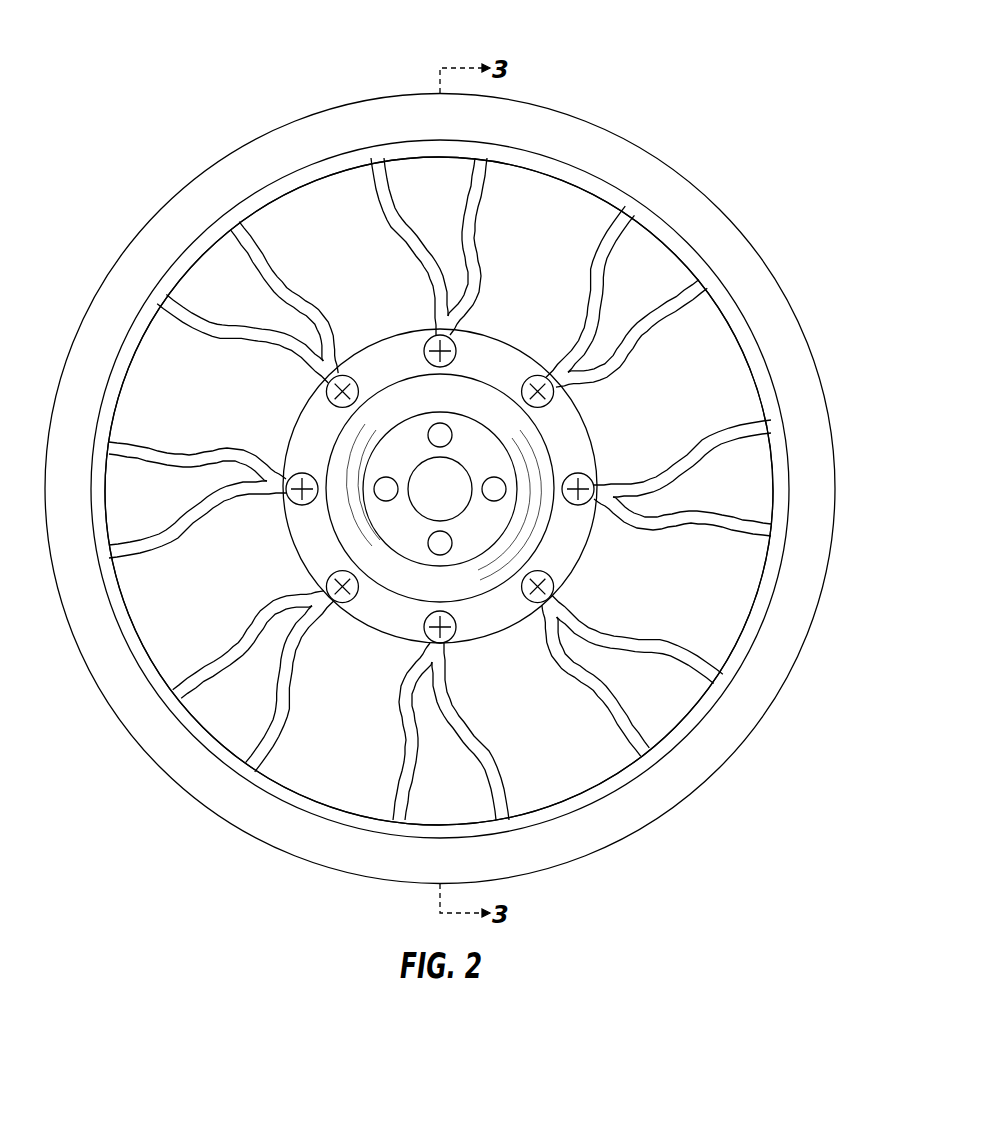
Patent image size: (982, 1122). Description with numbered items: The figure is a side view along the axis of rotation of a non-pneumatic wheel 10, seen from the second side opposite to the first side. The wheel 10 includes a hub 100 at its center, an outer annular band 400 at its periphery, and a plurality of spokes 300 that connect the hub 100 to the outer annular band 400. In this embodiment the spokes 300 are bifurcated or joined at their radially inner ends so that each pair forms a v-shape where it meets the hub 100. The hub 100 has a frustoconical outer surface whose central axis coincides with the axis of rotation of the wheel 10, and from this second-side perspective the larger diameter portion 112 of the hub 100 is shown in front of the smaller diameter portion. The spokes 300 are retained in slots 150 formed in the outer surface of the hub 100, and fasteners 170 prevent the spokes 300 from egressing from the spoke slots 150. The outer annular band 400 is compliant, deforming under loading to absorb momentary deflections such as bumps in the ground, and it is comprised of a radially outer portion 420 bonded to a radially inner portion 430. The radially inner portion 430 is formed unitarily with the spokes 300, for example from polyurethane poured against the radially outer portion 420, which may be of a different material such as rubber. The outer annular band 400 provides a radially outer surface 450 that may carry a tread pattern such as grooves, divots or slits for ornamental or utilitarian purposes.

The non-pneumatic wheel 10 is at (801, 69).
The hub 100 is at (495, 331).
The larger diameter portion 112 is at (505, 642).
The slots 150 is at (325, 385).
The fasteners 170 is at (299, 509).
The spokes 300 is at (403, 232).
The outer annular band 400 is at (553, 163).
The radially outer portion 420 is at (794, 624).
The radially inner portion 430 is at (760, 607).
The radially outer surface 450 is at (668, 815).